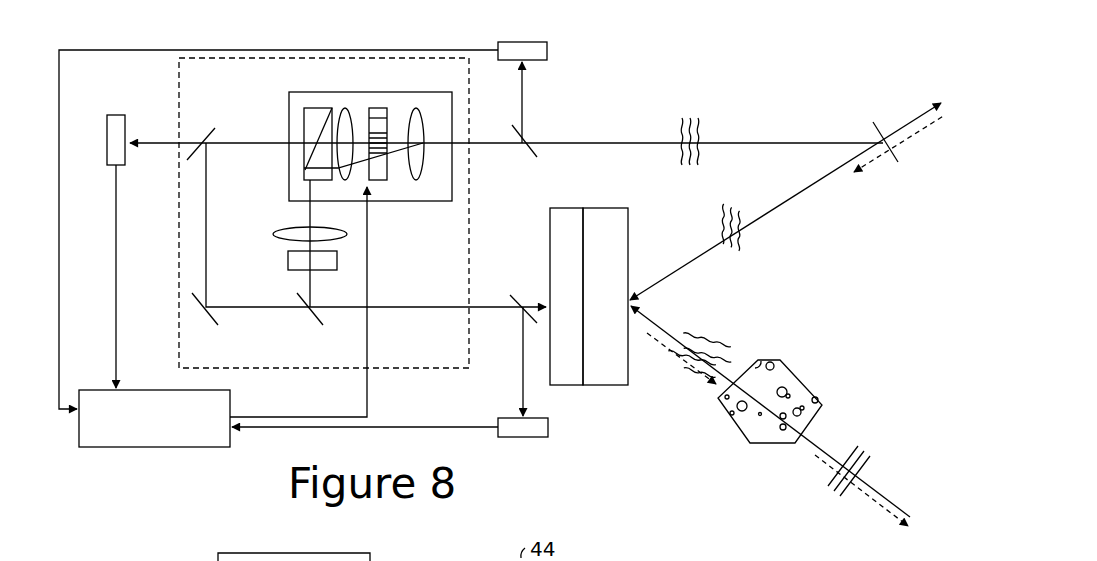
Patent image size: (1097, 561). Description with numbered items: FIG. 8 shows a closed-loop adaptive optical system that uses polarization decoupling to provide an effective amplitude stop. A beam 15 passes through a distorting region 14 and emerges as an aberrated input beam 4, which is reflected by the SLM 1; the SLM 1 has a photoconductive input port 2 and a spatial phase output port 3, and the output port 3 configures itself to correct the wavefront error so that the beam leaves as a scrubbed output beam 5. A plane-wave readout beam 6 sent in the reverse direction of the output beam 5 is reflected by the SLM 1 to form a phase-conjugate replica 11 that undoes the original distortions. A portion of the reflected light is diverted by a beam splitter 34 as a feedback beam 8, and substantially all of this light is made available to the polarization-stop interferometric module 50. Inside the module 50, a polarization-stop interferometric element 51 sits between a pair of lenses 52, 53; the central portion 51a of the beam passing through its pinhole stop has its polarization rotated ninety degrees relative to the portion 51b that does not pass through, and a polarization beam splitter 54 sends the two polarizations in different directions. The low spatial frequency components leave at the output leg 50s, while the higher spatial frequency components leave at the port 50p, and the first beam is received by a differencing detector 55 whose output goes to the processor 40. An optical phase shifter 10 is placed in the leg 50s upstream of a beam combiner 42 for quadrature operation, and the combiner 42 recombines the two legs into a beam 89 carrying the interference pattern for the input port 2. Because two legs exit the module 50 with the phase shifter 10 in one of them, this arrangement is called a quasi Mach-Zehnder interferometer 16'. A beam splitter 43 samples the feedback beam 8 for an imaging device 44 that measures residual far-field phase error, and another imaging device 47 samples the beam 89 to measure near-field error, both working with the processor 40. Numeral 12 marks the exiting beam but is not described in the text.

The spatial light modulator 1 is at (585, 299).
The photoconductive input port 2 is at (570, 206).
The spatial phase output port 3 is at (607, 210).
The aberrated input beam 4 is at (660, 318).
The scrubbed output beam 5 is at (738, 228).
The readout beam 6 is at (905, 145).
The feedback beam 8 is at (680, 120).
The optical phase shifter 10 is at (287, 265).
The phase-conjugate replica 11 is at (660, 337).
The transmitted light 12 is at (888, 512).
The distorting region 14 is at (797, 380).
The beam 15 is at (888, 493).
The quasi Mach-Zehnder interferometer 16' is at (345, 213).
The beam splitter 34 is at (880, 128).
The processor 40 is at (154, 418).
The beam combiner 42 is at (312, 328).
The beam splitter 43 is at (516, 126).
The imaging device 44 is at (528, 58).
The imaging device 47 is at (532, 430).
The polarization-stop interferometric module 50 is at (421, 198).
The second-beam output port 50p is at (257, 143).
The first-beam output leg 50s is at (307, 213).
The polarization-stop interferometric element 51 is at (407, 162).
The central portion 51a is at (389, 150).
The outer portion 51b is at (379, 110).
The lens 52 is at (345, 108).
The lens 53 is at (416, 113).
The polarization beam splitter 54 is at (311, 113).
The differencing detector 55 is at (118, 121).
The interferometric beam 89 is at (540, 303).